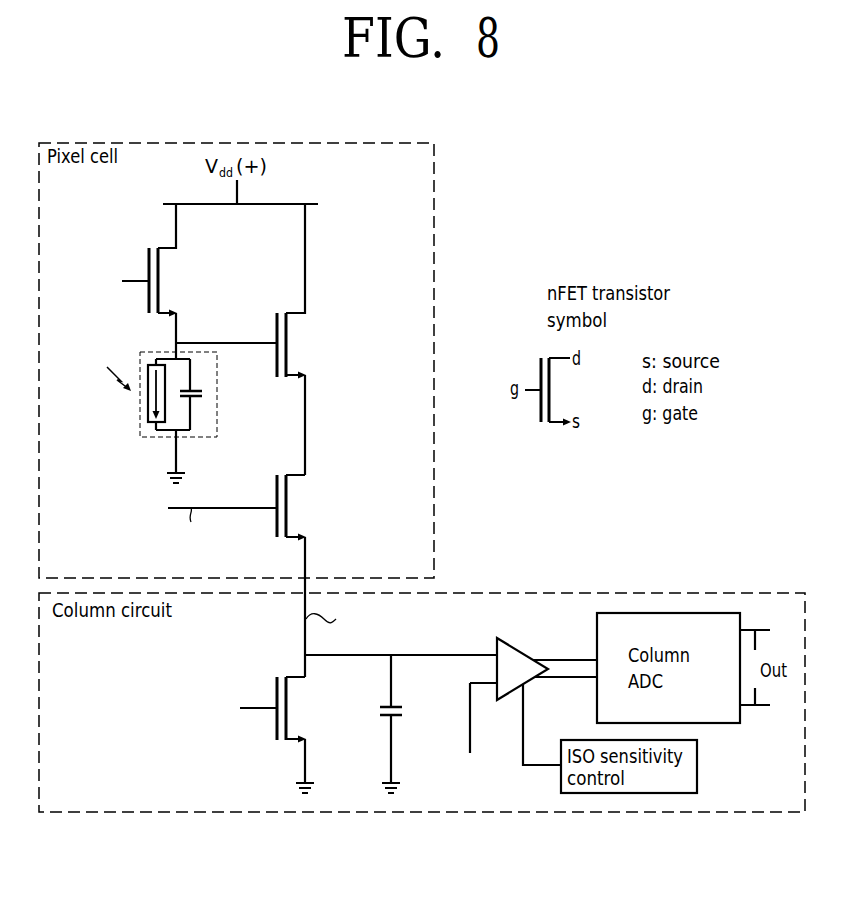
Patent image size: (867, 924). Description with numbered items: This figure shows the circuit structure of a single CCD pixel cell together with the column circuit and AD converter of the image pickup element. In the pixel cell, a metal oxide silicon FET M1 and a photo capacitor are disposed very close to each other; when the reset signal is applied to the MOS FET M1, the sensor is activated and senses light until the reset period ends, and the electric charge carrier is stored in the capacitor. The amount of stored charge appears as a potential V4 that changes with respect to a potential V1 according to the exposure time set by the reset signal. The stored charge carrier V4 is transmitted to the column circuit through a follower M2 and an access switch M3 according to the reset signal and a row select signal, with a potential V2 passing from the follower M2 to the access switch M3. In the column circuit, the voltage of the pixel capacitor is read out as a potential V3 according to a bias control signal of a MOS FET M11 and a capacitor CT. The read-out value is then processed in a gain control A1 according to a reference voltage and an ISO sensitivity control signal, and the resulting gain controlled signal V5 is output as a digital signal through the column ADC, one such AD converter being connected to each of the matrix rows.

The MOS FET M1 is at (152, 260).
The follower M2 is at (332, 291).
The access switch M3 is at (219, 501).
The MOS FET M11 is at (241, 726).
The gain control A1 is at (499, 706).
The capacitor CT is at (406, 724).
The potential V1 is at (226, 334).
The potential V2 is at (320, 425).
The potential V3 is at (383, 607).
The potential V4 is at (266, 517).
The gain controlled signal V5 is at (565, 654).